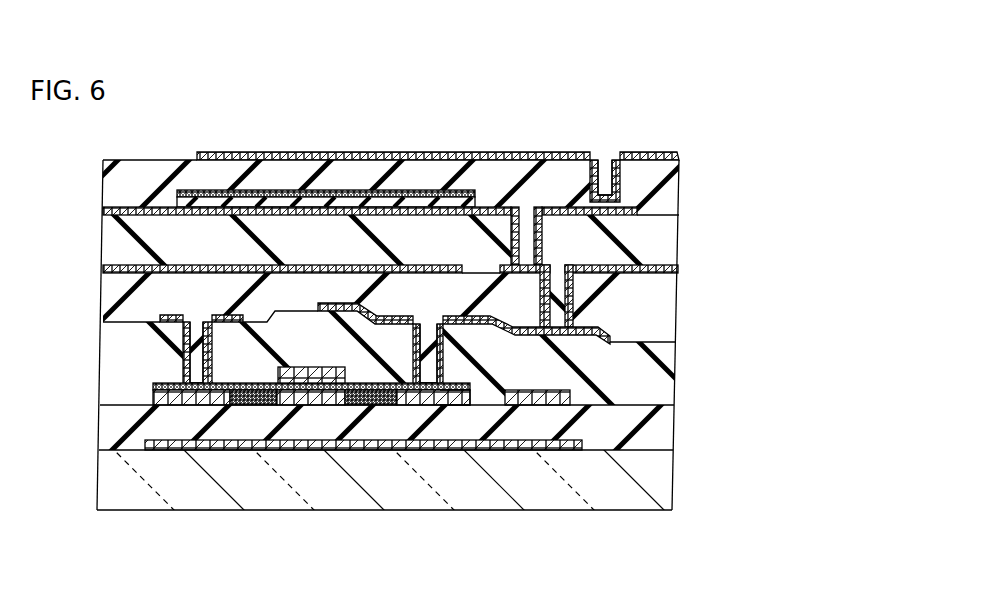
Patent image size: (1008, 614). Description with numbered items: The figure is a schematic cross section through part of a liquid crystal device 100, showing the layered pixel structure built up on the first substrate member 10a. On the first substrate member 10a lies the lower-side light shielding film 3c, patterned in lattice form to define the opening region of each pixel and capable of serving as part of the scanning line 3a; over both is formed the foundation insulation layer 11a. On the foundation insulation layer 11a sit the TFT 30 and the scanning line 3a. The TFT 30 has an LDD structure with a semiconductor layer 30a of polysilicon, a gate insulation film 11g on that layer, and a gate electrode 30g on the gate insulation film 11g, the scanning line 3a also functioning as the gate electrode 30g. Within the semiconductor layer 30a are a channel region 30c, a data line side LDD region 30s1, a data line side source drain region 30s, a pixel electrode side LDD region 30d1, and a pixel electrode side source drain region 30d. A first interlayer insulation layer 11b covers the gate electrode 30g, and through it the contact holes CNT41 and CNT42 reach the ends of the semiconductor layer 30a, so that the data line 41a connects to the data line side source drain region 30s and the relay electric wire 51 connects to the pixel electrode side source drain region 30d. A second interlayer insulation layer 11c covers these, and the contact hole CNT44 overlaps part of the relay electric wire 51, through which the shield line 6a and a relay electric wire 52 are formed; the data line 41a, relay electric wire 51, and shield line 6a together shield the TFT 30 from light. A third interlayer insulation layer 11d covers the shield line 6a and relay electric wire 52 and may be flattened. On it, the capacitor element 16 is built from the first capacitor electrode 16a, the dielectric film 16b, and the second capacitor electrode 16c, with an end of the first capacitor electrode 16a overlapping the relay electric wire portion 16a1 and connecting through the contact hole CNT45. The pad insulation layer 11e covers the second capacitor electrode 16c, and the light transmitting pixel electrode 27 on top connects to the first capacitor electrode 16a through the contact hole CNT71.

The display device 100 is at (610, 48).
The capacitor element 16 is at (370, 140).
The first capacitor electrode 16a is at (435, 98).
The dielectric film 16b is at (367, 192).
The second capacitor electrode 16c is at (423, 190).
The relay electric wire portion overlapping the first capacitor electrode 16a1 is at (660, 268).
The pixel electrode 27 is at (497, 157).
The contact hole CNT45 is at (527, 250).
The contact hole CNT71 is at (604, 192).
The contact hole CNT44 is at (557, 282).
The contact hole CNT41 is at (197, 333).
The contact hole CNT42 is at (428, 335).
The pad insulation layer 11e is at (668, 188).
The third interlayer insulation layer 11d is at (670, 240).
The second interlayer insulation layer 11c is at (672, 322).
The first interlayer insulation layer 11b is at (668, 376).
The foundation insulation layer 11a is at (668, 428).
The first substrate member 10a is at (668, 482).
The relay electric wire 52 is at (675, 265).
The shield line 6a is at (322, 268).
The relay electric wire 51 is at (482, 314).
The data line 41a is at (160, 316).
The scanning line 3a is at (538, 390).
The lower-side light shielding film 3c is at (572, 450).
The TFT 30 is at (350, 487).
The data line side source drain region 30s is at (190, 405).
The data line side LDD region 30s1 is at (255, 405).
The channel region 30c is at (300, 405).
The gate electrode 30g is at (324, 383).
The pixel electrode side LDD region 30d1 is at (370, 405).
The pixel electrode side source drain region 30d is at (430, 405).
The semiconductor layer 30a is at (472, 398).
The gate insulation film 11g is at (466, 392).